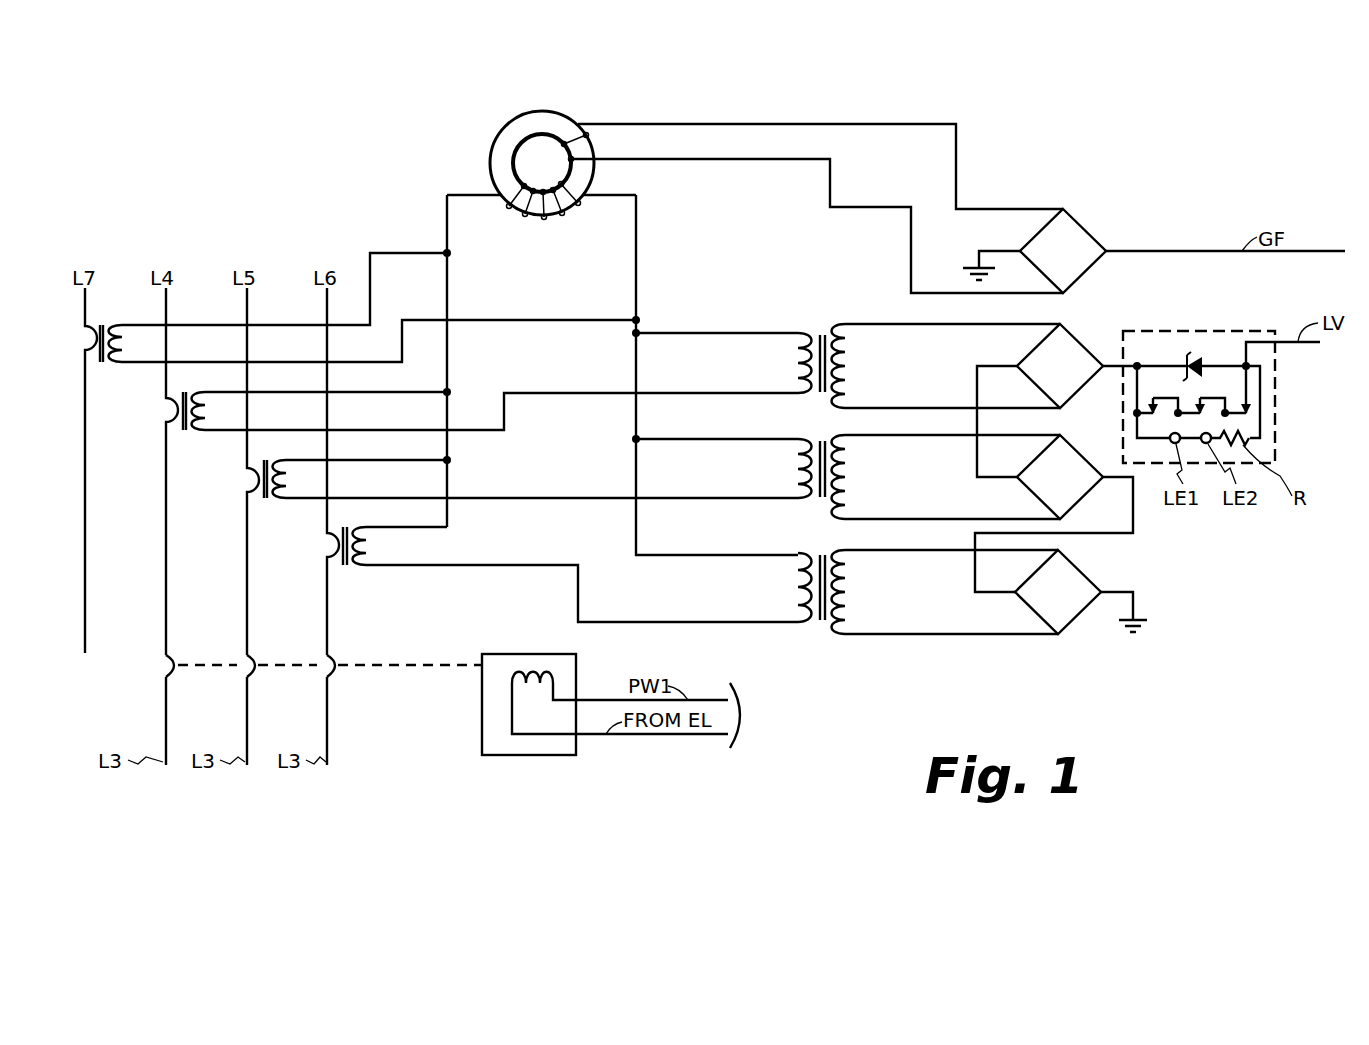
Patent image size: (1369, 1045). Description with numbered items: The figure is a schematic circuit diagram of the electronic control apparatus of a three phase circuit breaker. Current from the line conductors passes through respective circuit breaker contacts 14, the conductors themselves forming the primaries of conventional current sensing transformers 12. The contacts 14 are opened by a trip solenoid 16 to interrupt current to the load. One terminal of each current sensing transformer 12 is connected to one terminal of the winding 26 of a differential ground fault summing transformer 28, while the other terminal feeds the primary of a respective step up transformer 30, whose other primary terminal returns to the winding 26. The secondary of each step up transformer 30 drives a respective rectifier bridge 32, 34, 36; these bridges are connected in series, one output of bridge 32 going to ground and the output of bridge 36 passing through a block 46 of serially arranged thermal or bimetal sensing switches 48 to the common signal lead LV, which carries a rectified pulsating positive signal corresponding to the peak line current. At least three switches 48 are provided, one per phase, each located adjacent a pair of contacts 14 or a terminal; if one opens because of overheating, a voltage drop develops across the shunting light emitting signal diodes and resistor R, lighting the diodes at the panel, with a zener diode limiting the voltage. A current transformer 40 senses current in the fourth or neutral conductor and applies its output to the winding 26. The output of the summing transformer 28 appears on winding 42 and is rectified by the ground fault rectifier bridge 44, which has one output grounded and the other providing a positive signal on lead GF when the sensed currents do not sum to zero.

The current sensing transformer 12 is at (188, 432).
The circuit breaker contacts 14 is at (176, 665).
The trip solenoid 16 is at (548, 678).
The winding 26 is at (512, 216).
The differential ground fault summing transformer 28 is at (562, 104).
The step up transformer 30 is at (818, 333).
The rectifier bridge 32 is at (1046, 604).
The rectifier bridge 34 is at (1048, 489).
The rectifier bridge 36 is at (1048, 378).
The current transformer 40 is at (104, 366).
The winding 42 is at (592, 133).
The ground fault rectifier bridge 44 is at (1051, 263).
The block of thermal sensing switches 46 is at (1230, 375).
The thermal switch 48 is at (1163, 414).